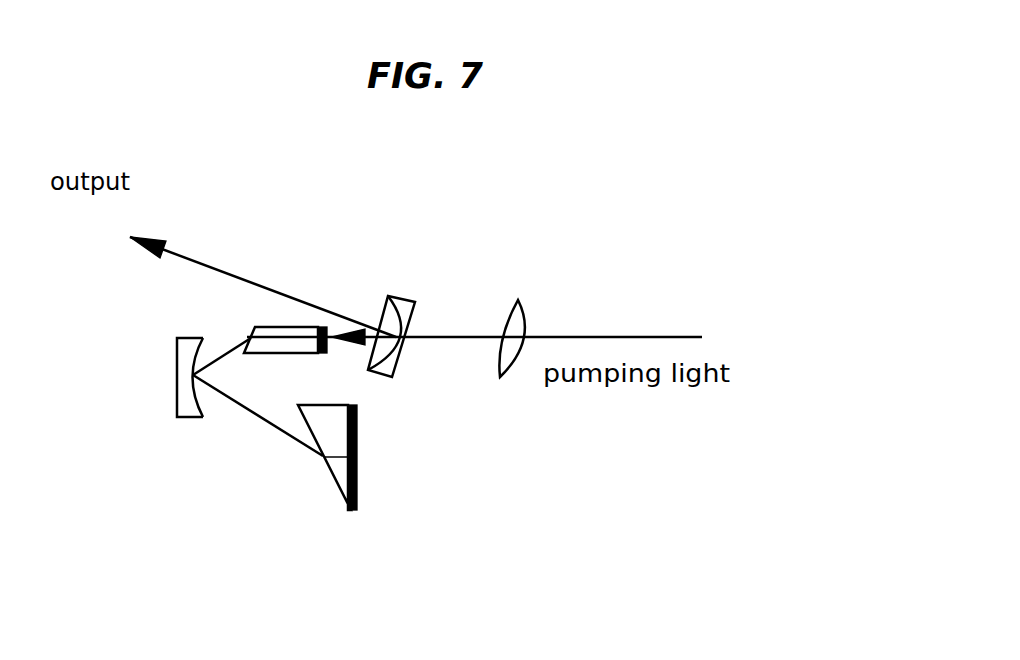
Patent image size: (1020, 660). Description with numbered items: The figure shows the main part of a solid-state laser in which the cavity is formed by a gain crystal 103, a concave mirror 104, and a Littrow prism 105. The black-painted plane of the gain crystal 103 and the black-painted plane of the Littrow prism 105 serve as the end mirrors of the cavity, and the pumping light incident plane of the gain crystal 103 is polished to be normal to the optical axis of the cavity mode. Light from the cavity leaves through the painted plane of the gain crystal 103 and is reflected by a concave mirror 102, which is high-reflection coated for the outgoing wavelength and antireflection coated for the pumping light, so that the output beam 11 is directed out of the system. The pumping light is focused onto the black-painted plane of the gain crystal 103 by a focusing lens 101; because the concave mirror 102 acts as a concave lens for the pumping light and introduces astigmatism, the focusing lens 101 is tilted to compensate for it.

The output laser beam 11 is at (170, 251).
The focusing lens 101 is at (520, 303).
The concave mirror 102 is at (407, 303).
The gain crystal 103 is at (285, 327).
The concave mirror 104 is at (180, 402).
The Littrow prism 105 is at (337, 468).